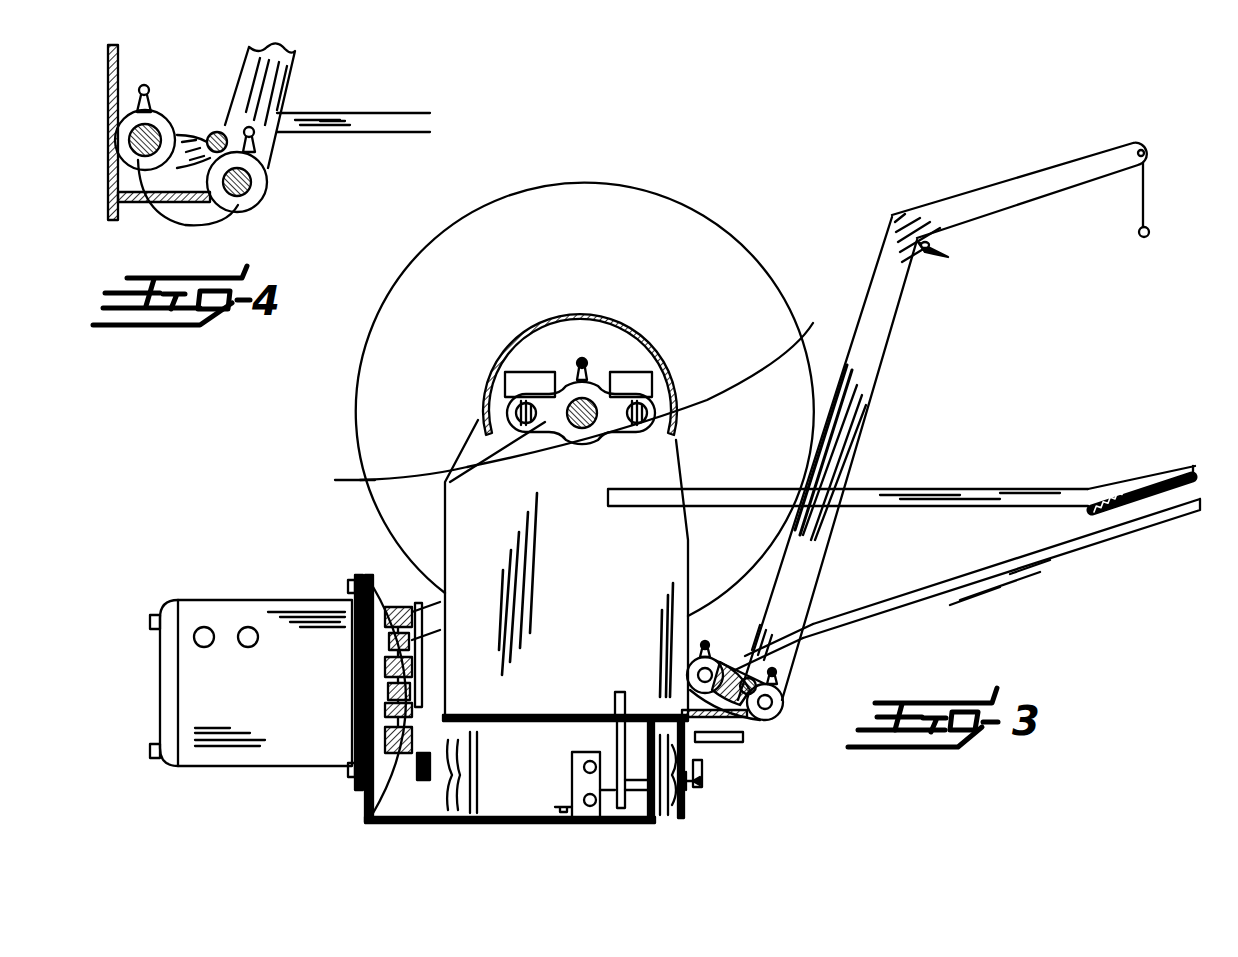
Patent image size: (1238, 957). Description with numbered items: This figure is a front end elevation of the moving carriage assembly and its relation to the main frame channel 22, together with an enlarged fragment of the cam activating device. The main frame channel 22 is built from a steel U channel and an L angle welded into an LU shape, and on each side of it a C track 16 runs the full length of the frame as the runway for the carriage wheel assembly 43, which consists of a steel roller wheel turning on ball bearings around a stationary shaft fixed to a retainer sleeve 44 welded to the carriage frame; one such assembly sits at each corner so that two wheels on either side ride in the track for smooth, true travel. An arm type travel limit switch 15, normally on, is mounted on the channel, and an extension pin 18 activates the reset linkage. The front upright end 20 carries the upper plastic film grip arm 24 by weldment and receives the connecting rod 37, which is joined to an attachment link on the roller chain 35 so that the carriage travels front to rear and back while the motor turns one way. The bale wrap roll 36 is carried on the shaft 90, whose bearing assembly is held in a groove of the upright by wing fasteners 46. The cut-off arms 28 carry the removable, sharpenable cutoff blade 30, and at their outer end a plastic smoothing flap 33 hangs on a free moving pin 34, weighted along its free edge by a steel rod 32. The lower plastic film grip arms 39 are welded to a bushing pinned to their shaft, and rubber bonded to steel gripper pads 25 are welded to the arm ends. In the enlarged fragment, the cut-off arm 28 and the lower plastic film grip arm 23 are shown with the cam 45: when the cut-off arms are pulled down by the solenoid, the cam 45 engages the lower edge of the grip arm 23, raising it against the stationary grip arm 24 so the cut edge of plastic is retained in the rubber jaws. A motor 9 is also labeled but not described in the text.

In FIG. 3, the motor 9 is at (285, 750).
In FIG. 3, the arm type travel limit switch 15 is at (572, 793).
In FIG. 3, the C track 16 is at (662, 820).
In FIG. 3, the extension pin 18 is at (745, 735).
In FIG. 3, the upright end 20 is at (470, 507).
In FIG. 3, the main frame channel 22 is at (405, 823).
In FIG. 4, the lower plastic film grip arm 23 is at (350, 118).
In FIG. 3, the lower plastic film grip arm 23 is at (1005, 570).
In FIG. 3, the upper plastic film grip arm 24 is at (958, 508).
In FIG. 3, the gripper pad 25 is at (1090, 520).
In FIG. 4, the cut-off arm 28 is at (280, 110).
In FIG. 3, the cut-off arm 28 is at (780, 680).
In FIG. 3, the cutoff blade 30 is at (918, 250).
In FIG. 3, the steel rod 32 is at (1140, 235).
In FIG. 3, the plastic smoothing flap 33 is at (1143, 195).
In FIG. 3, the free moving pin 34 is at (1128, 150).
In FIG. 3, the roller chain 35 is at (398, 600).
In FIG. 3, the bale wrap roll 36 is at (354, 422).
In FIG. 3, the connecting rod 37 is at (390, 795).
In FIG. 4, the lower plastic film grip arm 39 is at (186, 205).
In FIG. 3, the carriage wheel assembly 43 is at (695, 788).
In FIG. 3, the retainer sleeve 44 is at (703, 782).
In FIG. 4, the cam 45 is at (215, 125).
In FIG. 3, the cam 45 is at (748, 680).
In FIG. 3, the wing fastener 46 is at (599, 387).
In FIG. 3, the shaft 90 is at (603, 410).